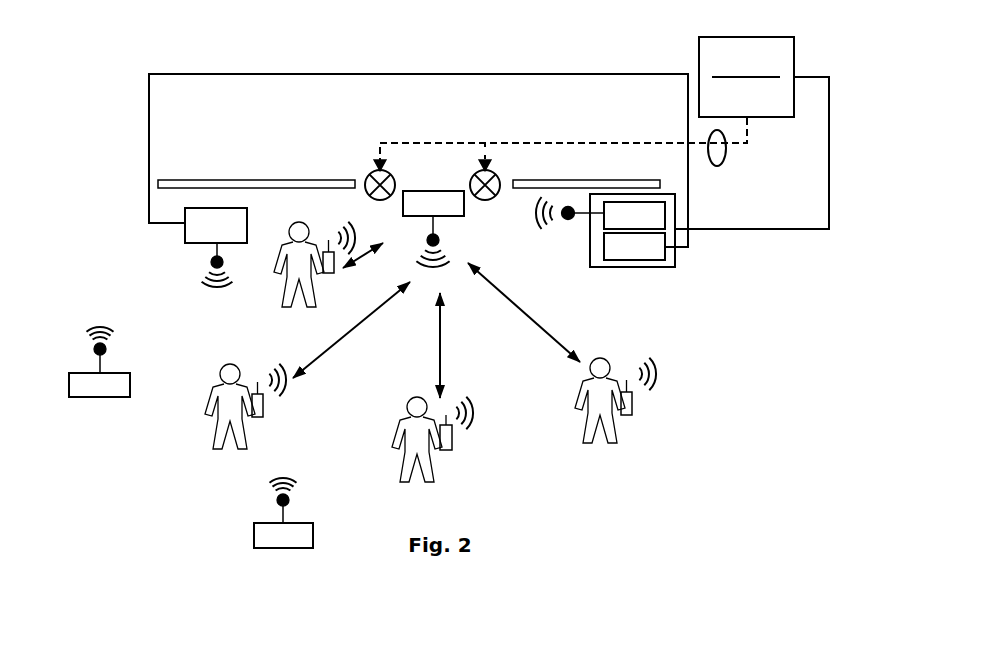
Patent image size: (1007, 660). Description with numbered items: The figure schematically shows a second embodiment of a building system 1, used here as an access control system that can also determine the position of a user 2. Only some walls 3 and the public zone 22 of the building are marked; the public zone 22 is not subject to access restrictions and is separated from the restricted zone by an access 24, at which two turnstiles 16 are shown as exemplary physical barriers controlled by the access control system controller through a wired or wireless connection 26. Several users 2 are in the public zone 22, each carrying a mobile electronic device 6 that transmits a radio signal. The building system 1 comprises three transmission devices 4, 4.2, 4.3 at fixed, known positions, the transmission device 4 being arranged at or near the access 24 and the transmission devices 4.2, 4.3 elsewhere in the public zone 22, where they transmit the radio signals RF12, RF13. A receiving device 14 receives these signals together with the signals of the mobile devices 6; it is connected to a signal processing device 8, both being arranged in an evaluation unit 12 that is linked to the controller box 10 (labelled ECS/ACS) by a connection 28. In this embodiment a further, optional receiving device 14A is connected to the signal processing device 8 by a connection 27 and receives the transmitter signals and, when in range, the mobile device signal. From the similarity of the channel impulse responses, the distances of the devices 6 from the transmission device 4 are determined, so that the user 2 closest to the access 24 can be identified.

The building system 1 is at (712, 318).
The user 2 is at (285, 273).
The wall 3 is at (572, 180).
The transmission device 4 is at (442, 191).
The transmission device 4.2 is at (132, 382).
The transmission device 4.3 is at (315, 533).
The mobile electronic device 6 is at (337, 275).
The signal processing device 8 is at (603, 250).
The ECS/ACS control system 10 is at (747, 36).
The evaluation unit 12 is at (637, 267).
The receiving device 14 is at (665, 213).
The receiving device 14A is at (190, 243).
The turnstile 16 is at (371, 175).
The public zone 22 is at (487, 364).
The access 24 is at (372, 133).
The connection 26 is at (723, 160).
The connection 27 is at (262, 74).
The connection 28 is at (775, 230).
The radio signal RF12 is at (104, 328).
The radio signal RF13 is at (293, 478).